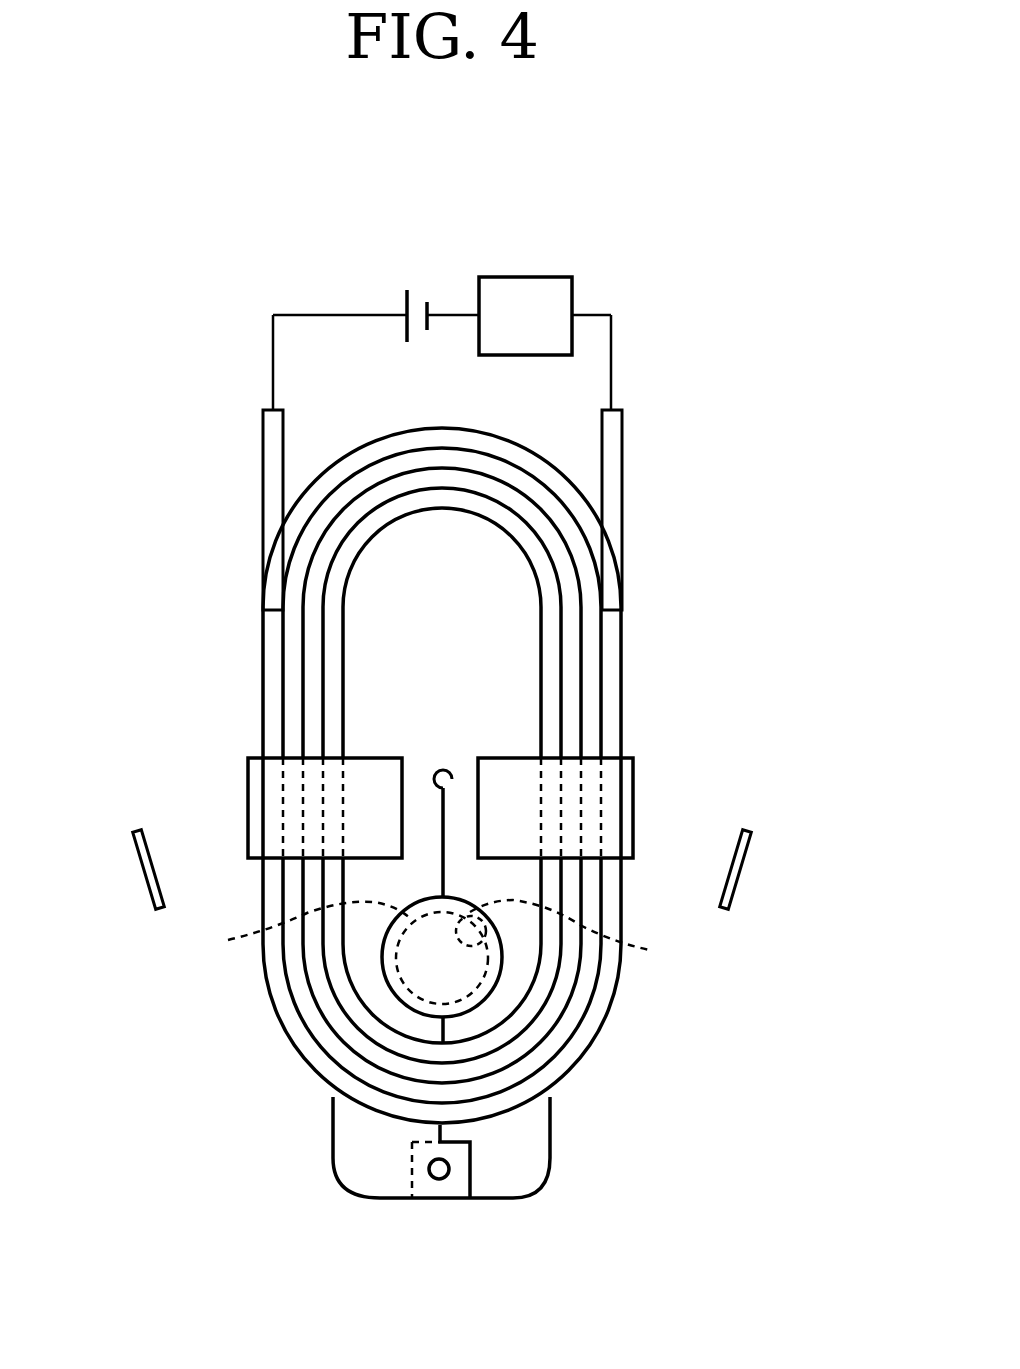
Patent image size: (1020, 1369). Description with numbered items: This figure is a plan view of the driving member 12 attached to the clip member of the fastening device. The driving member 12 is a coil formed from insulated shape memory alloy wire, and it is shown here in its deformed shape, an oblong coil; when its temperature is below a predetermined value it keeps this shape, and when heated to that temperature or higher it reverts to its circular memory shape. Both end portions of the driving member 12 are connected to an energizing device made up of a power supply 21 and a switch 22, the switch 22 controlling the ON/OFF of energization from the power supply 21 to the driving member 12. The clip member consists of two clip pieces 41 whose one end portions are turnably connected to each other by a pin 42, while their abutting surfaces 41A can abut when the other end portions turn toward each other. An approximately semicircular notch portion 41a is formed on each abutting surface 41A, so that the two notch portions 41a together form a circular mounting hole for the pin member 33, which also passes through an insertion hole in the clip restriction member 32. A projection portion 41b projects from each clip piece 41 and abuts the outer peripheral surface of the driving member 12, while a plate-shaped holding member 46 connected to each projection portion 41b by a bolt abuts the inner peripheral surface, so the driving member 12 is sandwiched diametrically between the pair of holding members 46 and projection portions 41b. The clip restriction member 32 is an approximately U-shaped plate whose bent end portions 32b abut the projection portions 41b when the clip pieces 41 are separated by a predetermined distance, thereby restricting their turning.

The driving member 12 is at (627, 462).
The power supply 21 is at (413, 290).
The switch 22 is at (520, 277).
The clip restriction member 32 is at (140, 920).
The end portions of clip restriction member 32b is at (140, 828).
The pin member 33 is at (462, 967).
The clip pieces 41 is at (332, 1138).
The abutting surface 41A is at (453, 767).
The notch portion 41a is at (460, 787).
The projection portion 41b is at (247, 813).
The pin 42 is at (436, 1180).
The holding member 46 is at (400, 787).